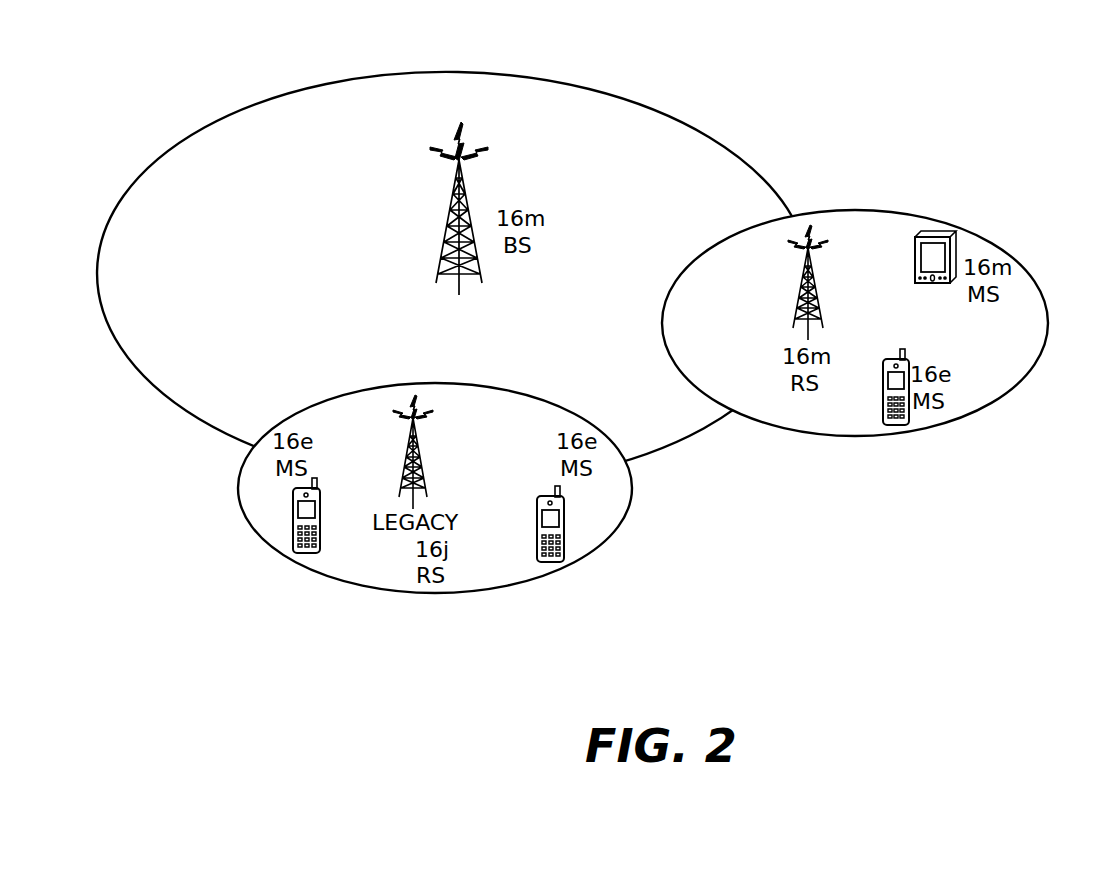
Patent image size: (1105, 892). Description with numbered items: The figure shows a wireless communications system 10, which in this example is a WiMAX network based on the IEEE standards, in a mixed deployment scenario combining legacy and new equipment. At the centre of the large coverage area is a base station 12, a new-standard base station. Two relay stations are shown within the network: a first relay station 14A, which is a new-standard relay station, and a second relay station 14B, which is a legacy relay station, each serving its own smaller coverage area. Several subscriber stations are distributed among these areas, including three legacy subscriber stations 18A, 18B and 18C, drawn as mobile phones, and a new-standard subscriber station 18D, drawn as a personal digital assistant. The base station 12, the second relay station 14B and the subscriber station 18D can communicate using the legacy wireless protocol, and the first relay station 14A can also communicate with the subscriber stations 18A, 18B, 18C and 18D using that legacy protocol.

The wireless communications system 10 is at (951, 118).
The base station 12 is at (452, 218).
The first relay station 14A is at (800, 270).
The second relay station 14B is at (405, 440).
The legacy 16e subscriber station 18A is at (296, 534).
The legacy 16e subscriber station 18B is at (585, 537).
The legacy 16e subscriber station 18C is at (882, 406).
The new 16m subscriber station 18D is at (915, 255).